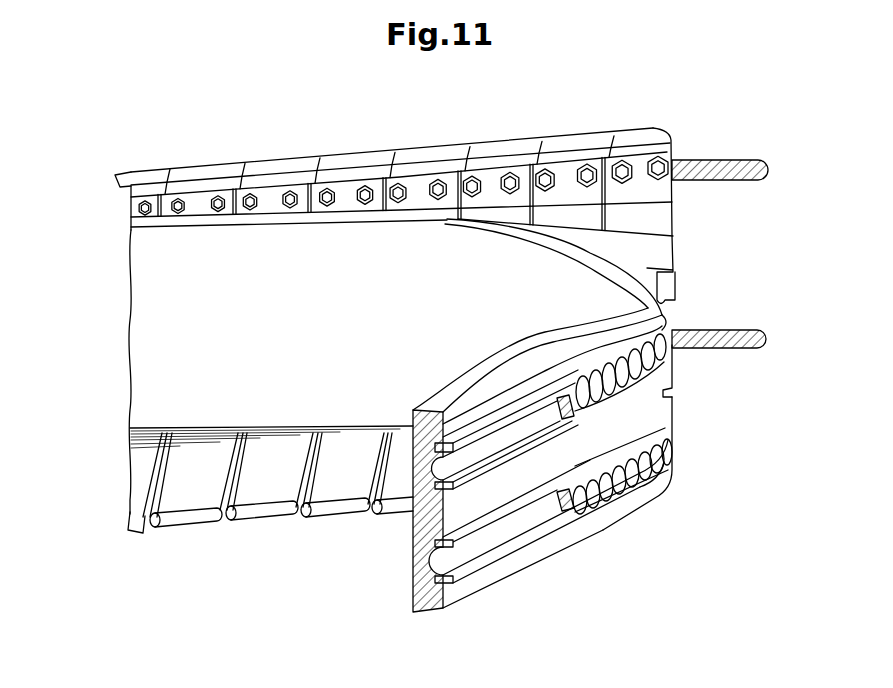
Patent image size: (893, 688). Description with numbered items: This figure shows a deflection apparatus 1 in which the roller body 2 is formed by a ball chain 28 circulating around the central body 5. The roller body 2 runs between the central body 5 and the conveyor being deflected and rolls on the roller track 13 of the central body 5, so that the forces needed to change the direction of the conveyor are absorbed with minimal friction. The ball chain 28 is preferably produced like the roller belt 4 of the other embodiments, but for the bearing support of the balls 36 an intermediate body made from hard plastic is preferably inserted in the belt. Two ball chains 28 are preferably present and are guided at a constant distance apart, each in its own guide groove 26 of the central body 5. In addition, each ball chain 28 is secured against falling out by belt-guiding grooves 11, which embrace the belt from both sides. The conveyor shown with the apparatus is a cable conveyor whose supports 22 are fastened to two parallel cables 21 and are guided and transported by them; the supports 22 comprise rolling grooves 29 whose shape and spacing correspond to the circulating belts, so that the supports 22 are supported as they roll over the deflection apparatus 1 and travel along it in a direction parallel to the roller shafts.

The deflection apparatus 1 is at (560, 105).
The support 22 is at (184, 173).
The rolling groove 29 is at (656, 216).
The cable 21 is at (703, 170).
The central body 5 is at (164, 362).
The roller body 2 is at (693, 472).
The ball chain 28 is at (660, 452).
The ball 36 is at (663, 480).
The roller track 13 is at (483, 502).
The roller belt 4 is at (575, 510).
The guide groove 26 is at (433, 562).
The belt-guiding groove 11 is at (415, 611).